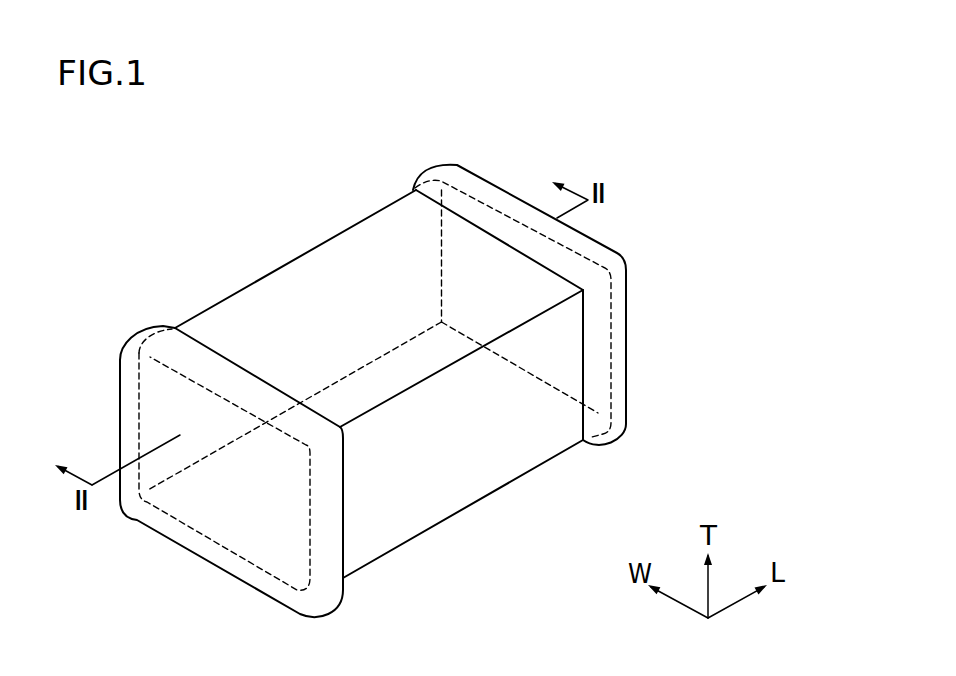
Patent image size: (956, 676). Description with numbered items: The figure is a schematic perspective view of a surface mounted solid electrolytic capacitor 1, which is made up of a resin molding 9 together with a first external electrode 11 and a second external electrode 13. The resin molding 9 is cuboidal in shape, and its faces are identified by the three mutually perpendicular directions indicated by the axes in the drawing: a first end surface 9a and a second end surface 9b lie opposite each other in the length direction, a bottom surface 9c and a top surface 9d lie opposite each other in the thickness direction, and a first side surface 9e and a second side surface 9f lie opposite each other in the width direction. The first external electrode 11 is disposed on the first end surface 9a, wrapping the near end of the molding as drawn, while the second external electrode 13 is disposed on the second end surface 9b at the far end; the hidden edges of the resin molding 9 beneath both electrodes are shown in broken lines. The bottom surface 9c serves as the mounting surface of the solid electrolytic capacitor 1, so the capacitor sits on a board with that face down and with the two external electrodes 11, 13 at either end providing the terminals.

The solid electrolytic capacitor 1 is at (112, 202).
The resin molding 9 is at (397, 240).
The first end surface 9a is at (222, 510).
The second end surface 9b is at (570, 328).
The bottom surface 9c is at (416, 512).
The top surface 9d is at (344, 258).
The first side surface 9e is at (488, 468).
The second side surface 9f is at (257, 318).
The first external electrode 11 is at (130, 383).
The second external electrode 13 is at (590, 253).